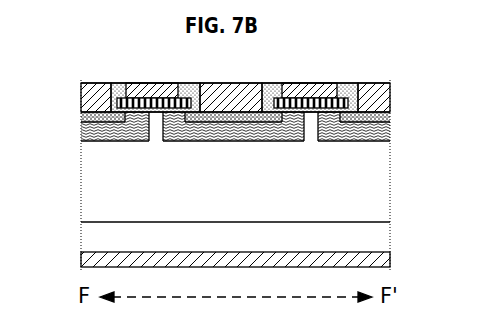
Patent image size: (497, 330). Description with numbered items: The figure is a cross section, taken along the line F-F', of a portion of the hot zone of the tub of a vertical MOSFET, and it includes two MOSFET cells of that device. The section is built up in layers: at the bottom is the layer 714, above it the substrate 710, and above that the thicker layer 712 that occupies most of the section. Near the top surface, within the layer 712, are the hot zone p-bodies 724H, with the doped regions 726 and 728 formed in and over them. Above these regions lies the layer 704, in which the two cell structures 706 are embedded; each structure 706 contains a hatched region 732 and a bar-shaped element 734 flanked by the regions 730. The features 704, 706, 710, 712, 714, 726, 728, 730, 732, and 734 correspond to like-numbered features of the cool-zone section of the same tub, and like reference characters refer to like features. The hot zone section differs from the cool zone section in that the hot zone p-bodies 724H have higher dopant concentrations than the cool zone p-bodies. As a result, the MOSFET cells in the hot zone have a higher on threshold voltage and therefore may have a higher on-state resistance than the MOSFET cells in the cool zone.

The gate dielectric 704 is at (97, 95).
The gate electrode 706 is at (157, 83).
The spacer 730 is at (352, 84).
The gate metal 732 is at (160, 90).
The gate contact 734 is at (120, 98).
The source region 728 is at (87, 119).
The body contact region 726 is at (100, 128).
The hot zone p-body 724H is at (107, 138).
The drift layer 712 is at (250, 187).
The substrate 710 is at (250, 247).
The drain electrode 714 is at (126, 258).